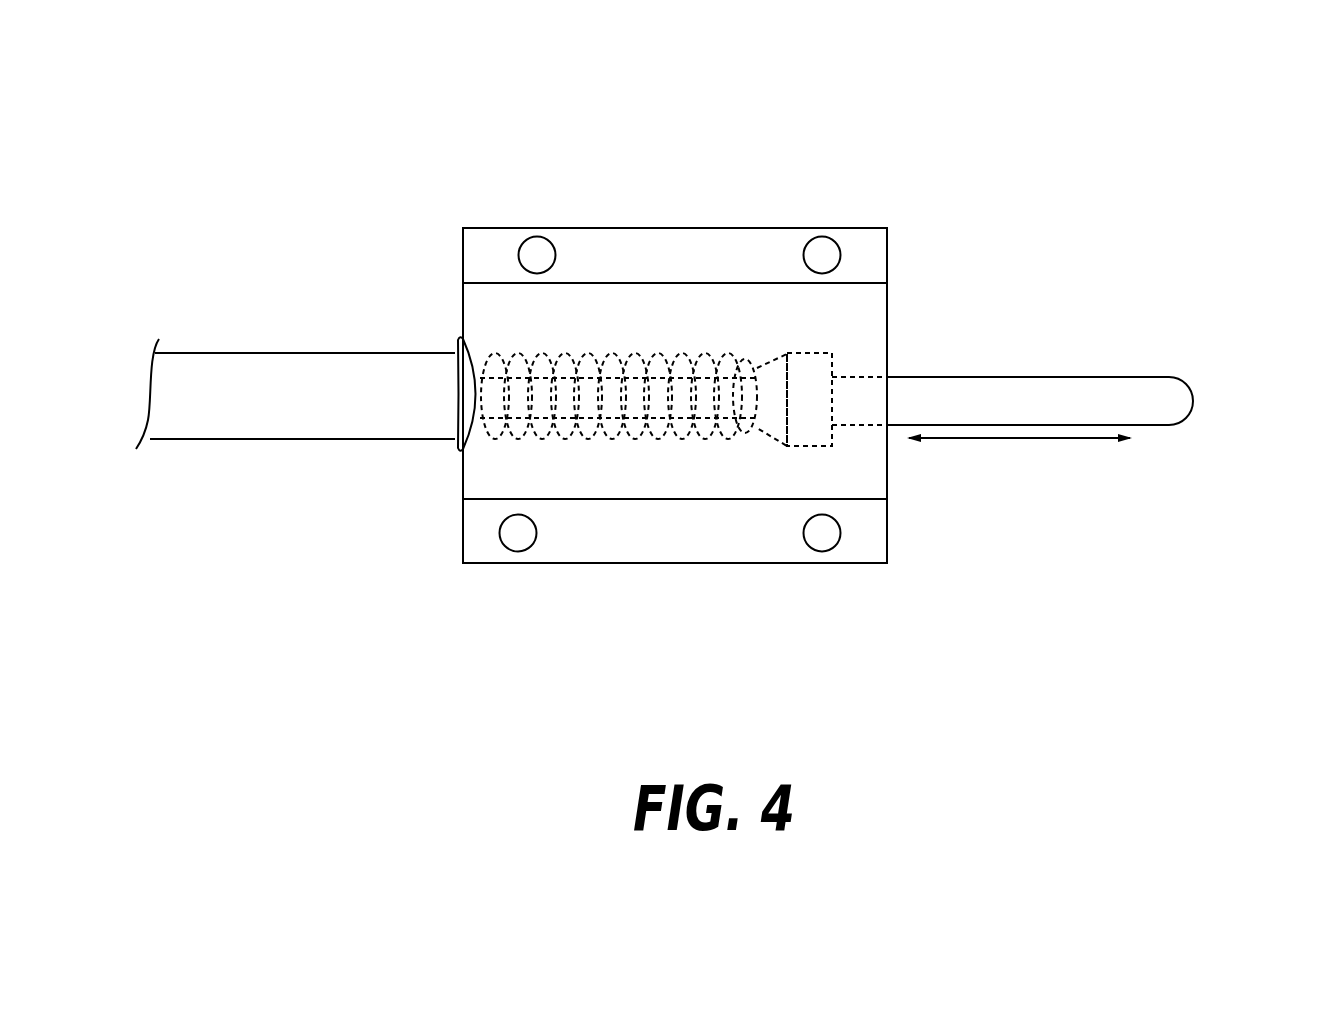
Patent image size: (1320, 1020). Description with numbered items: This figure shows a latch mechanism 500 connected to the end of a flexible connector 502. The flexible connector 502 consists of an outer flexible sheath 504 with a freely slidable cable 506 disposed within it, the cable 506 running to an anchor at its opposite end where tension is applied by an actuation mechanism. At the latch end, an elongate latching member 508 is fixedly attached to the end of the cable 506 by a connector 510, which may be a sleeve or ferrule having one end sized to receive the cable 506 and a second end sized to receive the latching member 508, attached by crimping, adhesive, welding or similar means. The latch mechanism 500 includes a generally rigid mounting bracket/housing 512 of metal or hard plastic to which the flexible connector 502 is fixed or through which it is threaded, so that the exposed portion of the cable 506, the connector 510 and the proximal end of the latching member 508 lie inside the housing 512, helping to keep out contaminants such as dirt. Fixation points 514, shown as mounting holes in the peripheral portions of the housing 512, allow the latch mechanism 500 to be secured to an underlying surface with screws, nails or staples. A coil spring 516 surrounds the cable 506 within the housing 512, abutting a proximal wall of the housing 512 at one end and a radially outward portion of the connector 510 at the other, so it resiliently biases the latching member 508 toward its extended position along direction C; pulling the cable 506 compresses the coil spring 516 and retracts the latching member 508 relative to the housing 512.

The latch mechanism 500 is at (986, 162).
The flexible connector 502 is at (340, 451).
The outer flexible sheath 504 is at (232, 417).
The cable 506 is at (593, 377).
The elongate latching member 508 is at (1147, 397).
The connector 510 is at (817, 352).
The housing 512 is at (902, 476).
The fixation points 514 is at (535, 253).
The coil spring 516 is at (697, 352).